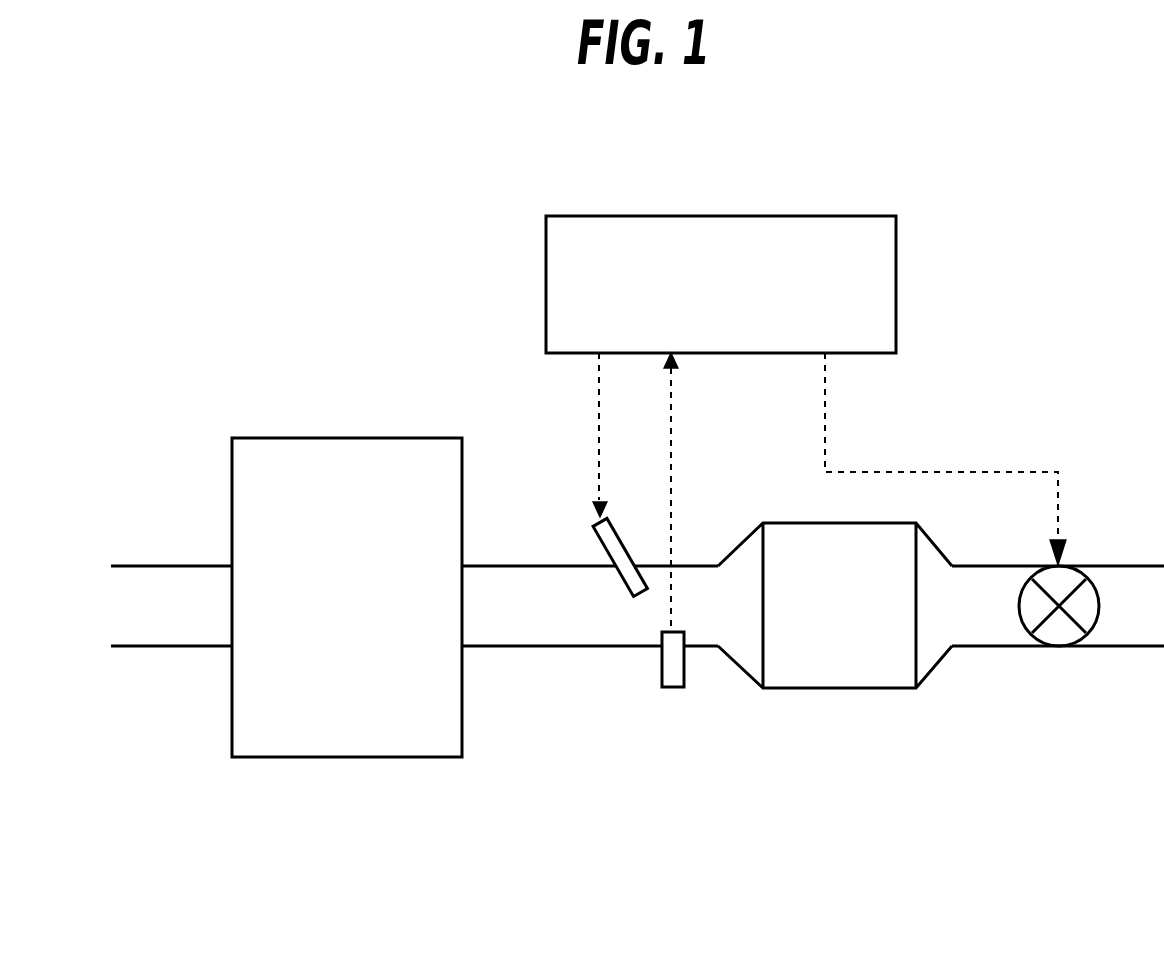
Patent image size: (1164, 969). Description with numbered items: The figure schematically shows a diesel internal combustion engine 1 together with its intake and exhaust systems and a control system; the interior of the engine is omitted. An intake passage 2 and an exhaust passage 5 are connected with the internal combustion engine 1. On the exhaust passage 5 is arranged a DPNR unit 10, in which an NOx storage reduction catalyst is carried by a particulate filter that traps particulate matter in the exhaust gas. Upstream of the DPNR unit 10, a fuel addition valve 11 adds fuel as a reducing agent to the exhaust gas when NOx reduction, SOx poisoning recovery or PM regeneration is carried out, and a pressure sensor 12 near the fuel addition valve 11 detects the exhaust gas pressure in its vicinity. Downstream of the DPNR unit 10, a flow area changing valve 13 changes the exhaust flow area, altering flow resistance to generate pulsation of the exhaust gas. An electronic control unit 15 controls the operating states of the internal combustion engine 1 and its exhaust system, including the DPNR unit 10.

The internal combustion engine 1 is at (307, 438).
The intake passage 2 is at (180, 646).
The exhaust passage 5 is at (538, 646).
The DPNR unit 10 is at (828, 688).
The fuel addition valve 11 is at (622, 590).
The pressure sensor 12 is at (684, 671).
The flow area changing valve 13 is at (1063, 646).
The electronic control unit 15 is at (896, 307).